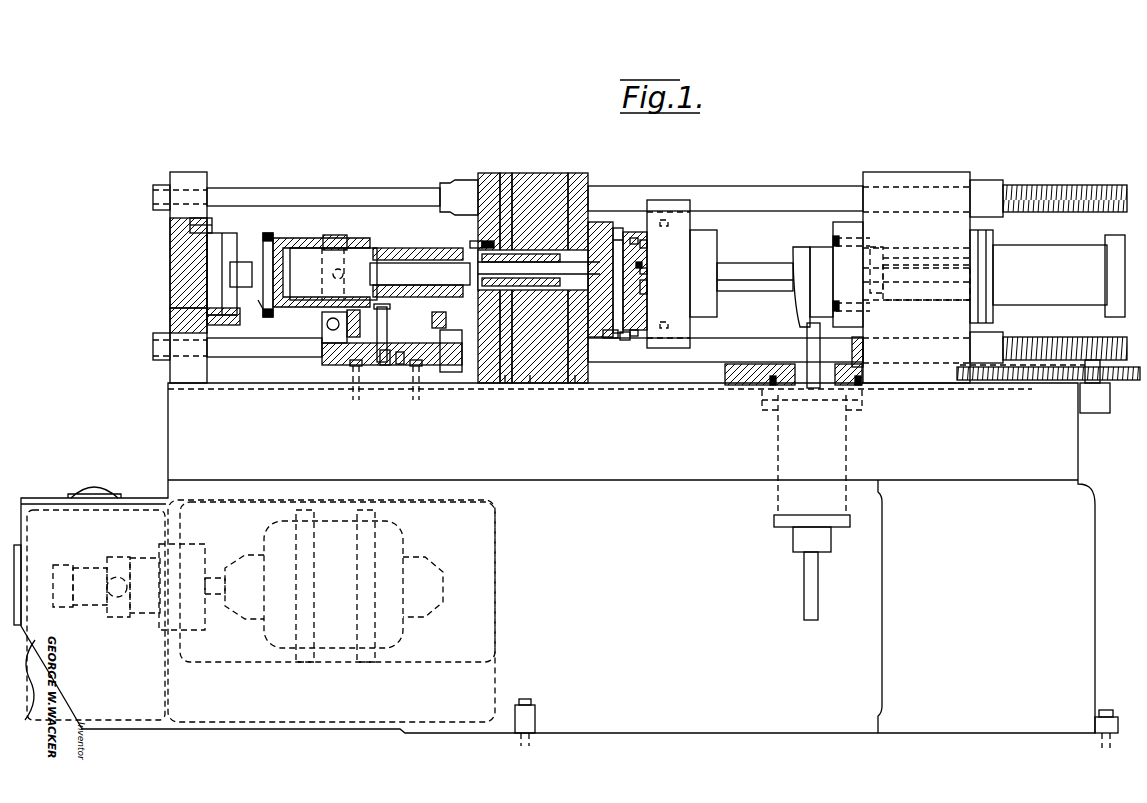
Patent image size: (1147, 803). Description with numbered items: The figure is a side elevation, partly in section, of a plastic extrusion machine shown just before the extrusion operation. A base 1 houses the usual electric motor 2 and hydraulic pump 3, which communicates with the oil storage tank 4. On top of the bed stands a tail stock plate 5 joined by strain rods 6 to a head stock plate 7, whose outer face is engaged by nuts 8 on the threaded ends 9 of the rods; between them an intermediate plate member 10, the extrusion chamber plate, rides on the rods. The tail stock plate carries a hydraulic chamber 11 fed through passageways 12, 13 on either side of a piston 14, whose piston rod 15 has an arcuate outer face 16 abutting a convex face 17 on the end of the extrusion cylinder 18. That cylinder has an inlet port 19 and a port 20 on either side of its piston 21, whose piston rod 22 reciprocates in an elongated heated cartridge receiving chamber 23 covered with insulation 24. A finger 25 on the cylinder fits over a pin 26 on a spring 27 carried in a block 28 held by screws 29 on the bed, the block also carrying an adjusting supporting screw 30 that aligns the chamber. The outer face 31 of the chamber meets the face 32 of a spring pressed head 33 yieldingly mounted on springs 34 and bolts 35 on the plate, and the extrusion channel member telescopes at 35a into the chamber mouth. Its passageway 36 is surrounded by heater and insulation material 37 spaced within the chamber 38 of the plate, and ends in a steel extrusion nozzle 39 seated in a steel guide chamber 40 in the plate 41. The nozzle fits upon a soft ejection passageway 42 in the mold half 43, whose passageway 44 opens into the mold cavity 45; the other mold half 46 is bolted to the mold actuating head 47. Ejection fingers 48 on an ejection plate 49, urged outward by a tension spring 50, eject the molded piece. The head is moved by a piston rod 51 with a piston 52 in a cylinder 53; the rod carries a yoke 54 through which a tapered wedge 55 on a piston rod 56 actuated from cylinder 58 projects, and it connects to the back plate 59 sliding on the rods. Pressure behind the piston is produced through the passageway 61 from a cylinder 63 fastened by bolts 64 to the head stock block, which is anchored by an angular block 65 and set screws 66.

The base 1 is at (168, 428).
The electric motor 2 is at (400, 545).
The hydraulic pump 3 is at (146, 562).
The oil storage tank 4 is at (485, 695).
The tail stock plate 5 is at (170, 243).
The strain rod 6 is at (333, 204).
The head stock plate 7 is at (908, 183).
The nuts 8 is at (993, 180).
The threaded end 9 is at (1063, 185).
The intermediate plate member 10 is at (536, 173).
The hydraulic chamber 11 is at (214, 230).
The passageway 12 is at (170, 307).
The passageway 13 is at (240, 320).
The piston 14 is at (225, 232).
The piston rod 15 is at (245, 262).
The arcuate outer face 16 is at (270, 262).
The convex face 17 is at (290, 262).
The extrusion cylinder 18 is at (350, 240).
The inlet port 19 is at (262, 300).
The port 20 is at (387, 312).
The piston 21 is at (295, 280).
The piston rod 22 is at (372, 263).
The cartridge receiving chamber 23 is at (418, 252).
The insulation 24 is at (322, 323).
The finger 25 is at (388, 332).
The pin 26 is at (398, 366).
The spring 27 is at (378, 368).
The block 28 is at (322, 358).
The screws 29 is at (348, 372).
The adjusting supporting screw 30 is at (420, 368).
The outer face 31 is at (470, 244).
The face 32 is at (484, 241).
The spring pressed head 33 is at (446, 318).
The springs 34 is at (488, 173).
The bolts 35 is at (510, 173).
The telescoping portion 35a is at (555, 173).
The passageway 36 is at (505, 385).
The heater and insulation material 37 is at (530, 385).
The chamber 38 is at (596, 224).
The steel extrusion nozzle 39 is at (618, 238).
The steel guide chamber 40 is at (616, 226).
The plate 41 is at (584, 180).
The ejection passageway 42 is at (635, 230).
The mold half 43 is at (605, 338).
The passageway 44 is at (642, 264).
The mold cavity 45 is at (622, 340).
The mold half 46 is at (646, 244).
The mold actuating head 47 is at (658, 200).
The ejection fingers 48 is at (635, 338).
The ejection plate 49 is at (647, 271).
The tension spring 50 is at (647, 290).
The piston rod 51 is at (740, 266).
The piston 52 is at (877, 248).
The cylinder 53 is at (888, 258).
The yoke 54 is at (807, 255).
The tapered wedge 55 is at (830, 238).
The piston rod 56 is at (807, 353).
The cylinder 58 is at (778, 500).
The back plate 59 is at (692, 235).
The passageway 61 is at (925, 265).
The cylinder 63 is at (1055, 255).
The bolts 64 is at (993, 240).
The angular block 65 is at (863, 368).
The set screws 66 is at (1060, 383).